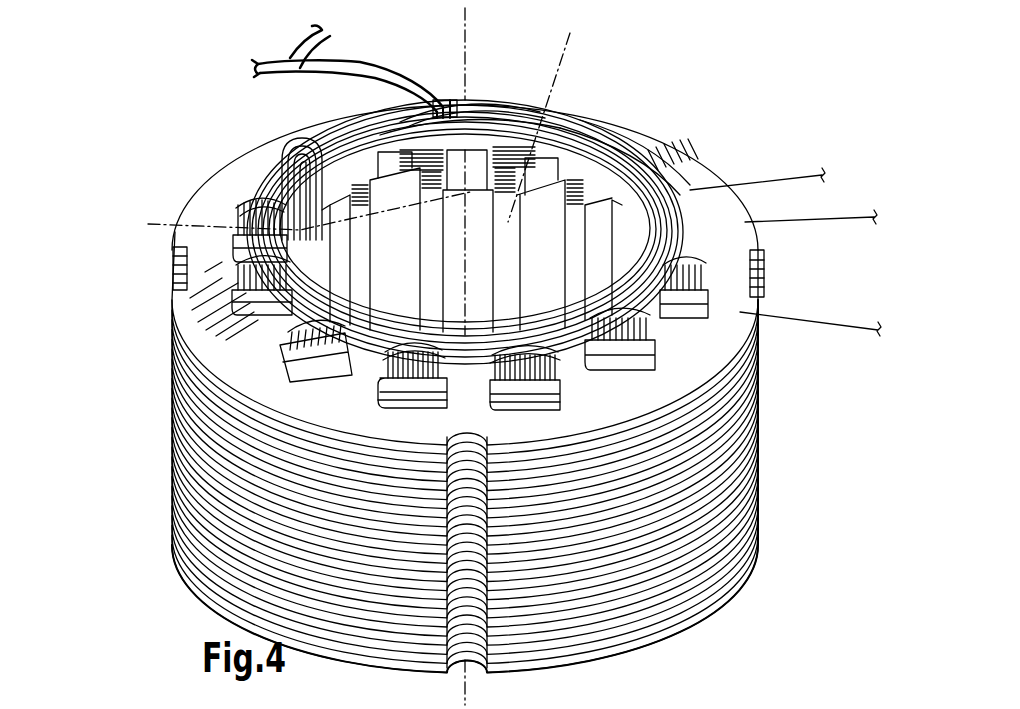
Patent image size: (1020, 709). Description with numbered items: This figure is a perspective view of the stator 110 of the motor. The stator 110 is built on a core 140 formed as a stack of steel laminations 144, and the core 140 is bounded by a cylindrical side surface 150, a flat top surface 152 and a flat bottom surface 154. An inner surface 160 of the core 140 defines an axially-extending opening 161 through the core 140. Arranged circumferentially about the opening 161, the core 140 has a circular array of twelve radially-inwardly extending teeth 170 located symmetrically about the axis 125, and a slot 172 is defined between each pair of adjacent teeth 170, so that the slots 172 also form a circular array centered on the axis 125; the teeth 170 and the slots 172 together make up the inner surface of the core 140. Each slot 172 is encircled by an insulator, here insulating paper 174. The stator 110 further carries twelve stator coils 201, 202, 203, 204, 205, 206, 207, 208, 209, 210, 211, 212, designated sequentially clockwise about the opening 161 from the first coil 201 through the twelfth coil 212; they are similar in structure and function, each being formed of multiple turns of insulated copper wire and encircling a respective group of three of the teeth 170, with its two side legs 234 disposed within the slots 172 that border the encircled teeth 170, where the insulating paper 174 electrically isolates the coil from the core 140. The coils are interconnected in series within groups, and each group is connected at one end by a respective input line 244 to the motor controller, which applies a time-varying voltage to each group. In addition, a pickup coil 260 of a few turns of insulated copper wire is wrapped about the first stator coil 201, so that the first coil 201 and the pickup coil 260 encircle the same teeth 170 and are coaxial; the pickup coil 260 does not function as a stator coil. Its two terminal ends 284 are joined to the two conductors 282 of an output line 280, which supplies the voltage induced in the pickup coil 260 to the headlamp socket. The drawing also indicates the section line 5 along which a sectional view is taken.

The stator 110 is at (733, 74).
The axis 125 is at (466, 10).
The section line 5- 5 is at (570, 33).
The core 140 is at (517, 389).
The steel laminations 144 is at (765, 468).
The cylindrical side surface 150 is at (763, 486).
The flat top surface 152 is at (740, 281).
The flat bottom surface 154 is at (723, 593).
The inner surface 160 is at (623, 200).
The axially-extending opening 161 is at (538, 208).
The teeth 170 is at (418, 302).
The slot 172 is at (498, 284).
The insulating paper 174 is at (382, 412).
The first coil 201 is at (478, 96).
The second coil 202 is at (600, 130).
The third coil 203 is at (630, 163).
The fourth coil 204 is at (740, 266).
The fifth coil 205 is at (655, 325).
The sixth coil 206 is at (562, 372).
The seventh coil 207 is at (475, 380).
The eighth coil 208 is at (355, 378).
The ninth coil 209 is at (278, 330).
The tenth coil 210 is at (247, 207).
The eleventh coil 211 is at (292, 156).
The twelfth coil 212 is at (318, 150).
The side legs 234 is at (355, 229).
The input line 244 is at (795, 173).
The pickup coil 260 is at (502, 102).
The output line 280 is at (298, 50).
The conductors 282 is at (331, 43).
The terminal ends 284 is at (444, 100).